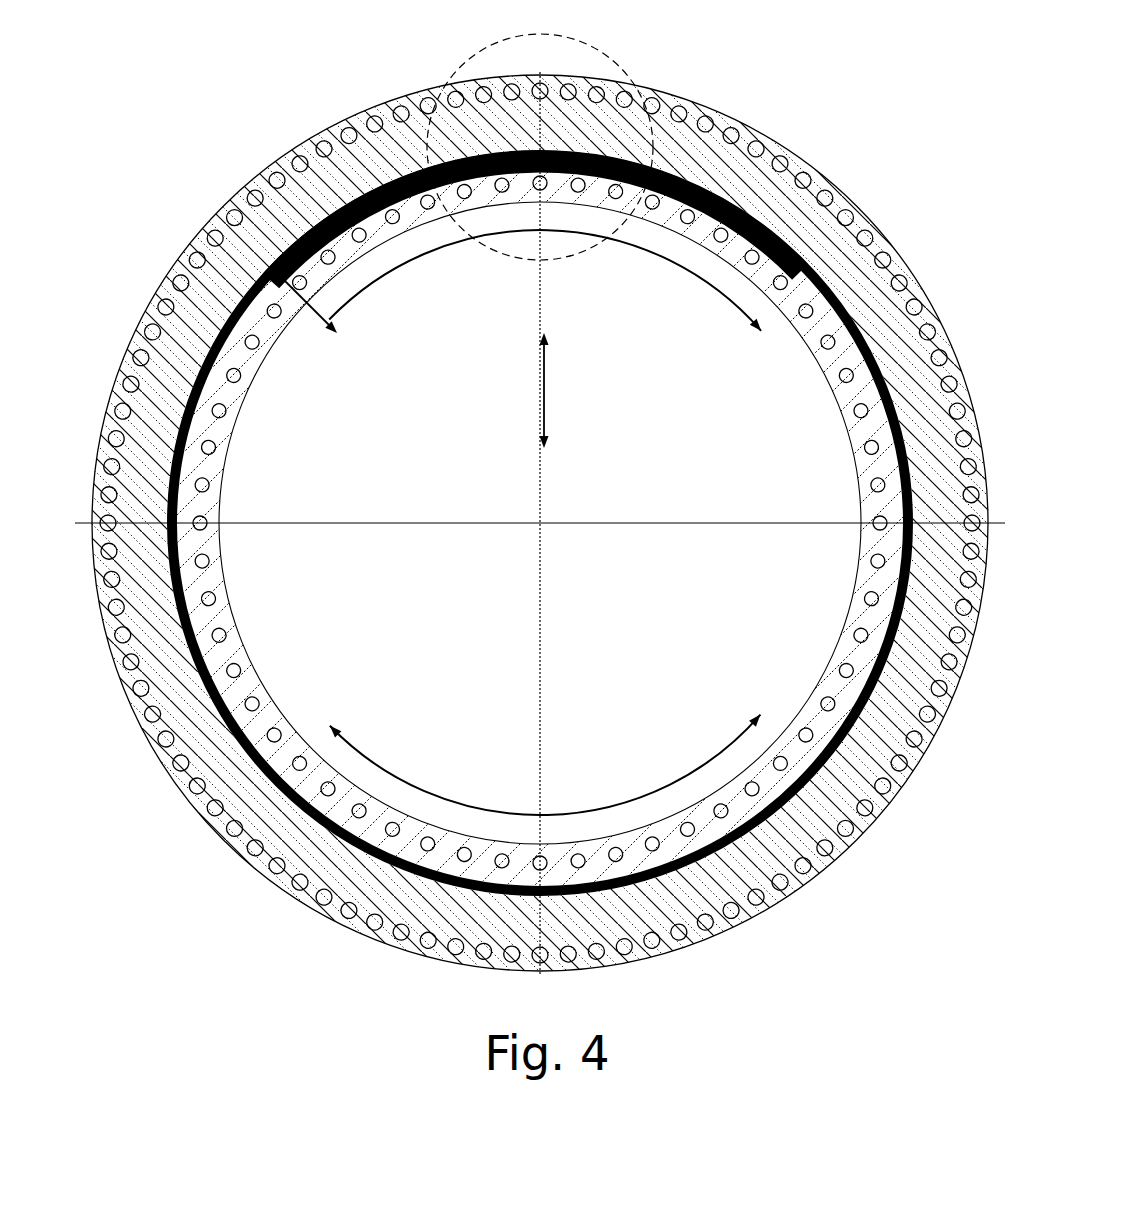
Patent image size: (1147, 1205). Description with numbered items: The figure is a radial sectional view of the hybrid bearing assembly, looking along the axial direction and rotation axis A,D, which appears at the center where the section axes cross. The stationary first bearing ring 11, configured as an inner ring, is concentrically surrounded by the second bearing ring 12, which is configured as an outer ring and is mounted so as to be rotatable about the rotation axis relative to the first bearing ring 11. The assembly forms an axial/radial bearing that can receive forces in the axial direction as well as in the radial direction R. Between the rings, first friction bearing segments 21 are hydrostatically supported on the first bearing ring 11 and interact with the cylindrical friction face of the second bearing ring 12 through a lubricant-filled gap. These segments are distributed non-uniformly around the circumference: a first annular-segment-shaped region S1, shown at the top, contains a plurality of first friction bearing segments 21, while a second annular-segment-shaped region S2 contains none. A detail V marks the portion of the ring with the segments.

The first bearing ring 11 is at (242, 395).
The second bearing ring 12 is at (703, 158).
The first friction bearing segments 21 is at (393, 193).
The detail view V is at (619, 48).
The radial direction R is at (547, 407).
The first annular-segment-shaped region S1 is at (700, 278).
The second annular-segment-shaped region S2 is at (652, 792).
The axial direction and rotation axis A,D is at (539, 528).